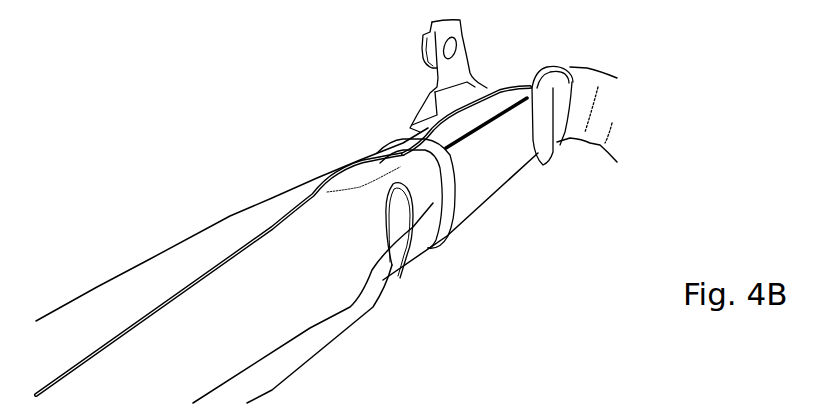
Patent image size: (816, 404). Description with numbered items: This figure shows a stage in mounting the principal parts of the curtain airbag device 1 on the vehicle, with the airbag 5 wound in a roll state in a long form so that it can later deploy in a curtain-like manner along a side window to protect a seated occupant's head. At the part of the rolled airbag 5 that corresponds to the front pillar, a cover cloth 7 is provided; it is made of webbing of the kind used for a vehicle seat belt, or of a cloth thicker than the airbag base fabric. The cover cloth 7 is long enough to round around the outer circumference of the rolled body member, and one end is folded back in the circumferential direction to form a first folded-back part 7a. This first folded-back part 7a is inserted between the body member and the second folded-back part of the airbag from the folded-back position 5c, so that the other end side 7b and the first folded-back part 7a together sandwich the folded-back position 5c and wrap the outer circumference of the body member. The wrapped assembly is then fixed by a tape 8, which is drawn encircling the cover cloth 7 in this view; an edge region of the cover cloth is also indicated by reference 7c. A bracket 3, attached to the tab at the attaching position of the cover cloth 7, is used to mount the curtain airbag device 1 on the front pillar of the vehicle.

The curtain airbag device 1 is at (330, 93).
The bracket 3 is at (463, 38).
The airbag 5 is at (197, 320).
The folded-back position 5c is at (348, 320).
The cover cloth 7 is at (478, 233).
The first folded-back part 7a is at (390, 205).
The other end side 7b is at (490, 180).
The tube edge 7c is at (327, 190).
The tape 8 is at (446, 232).